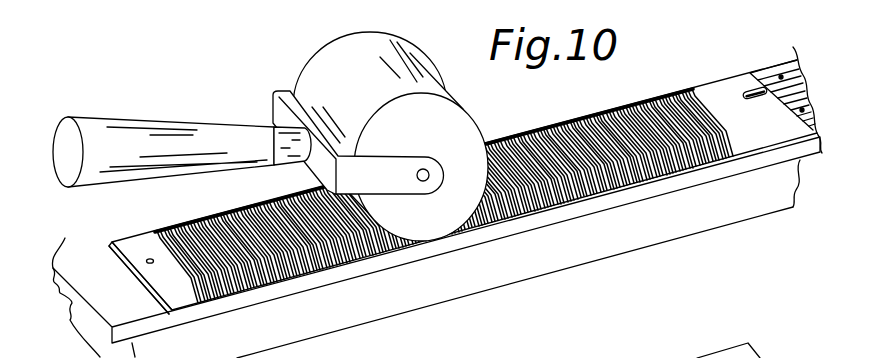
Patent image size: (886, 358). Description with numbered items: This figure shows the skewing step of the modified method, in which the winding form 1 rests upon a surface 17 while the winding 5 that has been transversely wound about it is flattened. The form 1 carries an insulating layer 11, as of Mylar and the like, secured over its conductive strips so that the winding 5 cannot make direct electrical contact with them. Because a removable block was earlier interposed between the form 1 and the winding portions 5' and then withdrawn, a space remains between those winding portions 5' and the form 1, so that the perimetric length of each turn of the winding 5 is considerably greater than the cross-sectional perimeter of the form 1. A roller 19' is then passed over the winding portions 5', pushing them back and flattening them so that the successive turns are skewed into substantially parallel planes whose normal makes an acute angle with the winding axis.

The winding form 1 is at (142, 246).
The winding 5 is at (445, 196).
The winding portions 5' is at (424, 160).
The insulating layer 11 is at (146, 288).
The surface 17 is at (773, 72).
The roller 19' is at (390, 136).